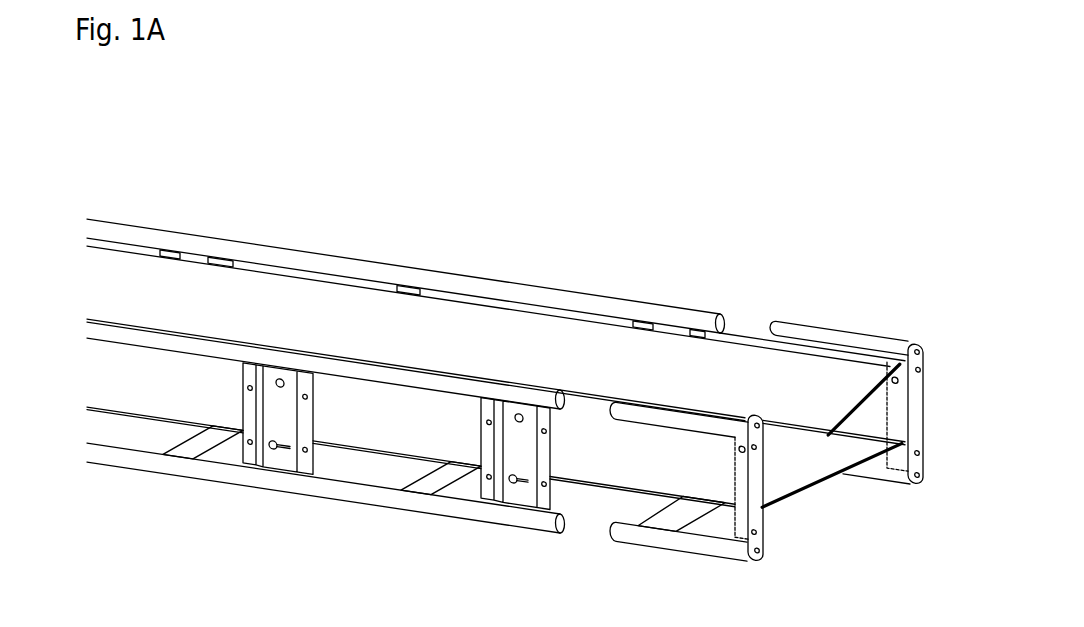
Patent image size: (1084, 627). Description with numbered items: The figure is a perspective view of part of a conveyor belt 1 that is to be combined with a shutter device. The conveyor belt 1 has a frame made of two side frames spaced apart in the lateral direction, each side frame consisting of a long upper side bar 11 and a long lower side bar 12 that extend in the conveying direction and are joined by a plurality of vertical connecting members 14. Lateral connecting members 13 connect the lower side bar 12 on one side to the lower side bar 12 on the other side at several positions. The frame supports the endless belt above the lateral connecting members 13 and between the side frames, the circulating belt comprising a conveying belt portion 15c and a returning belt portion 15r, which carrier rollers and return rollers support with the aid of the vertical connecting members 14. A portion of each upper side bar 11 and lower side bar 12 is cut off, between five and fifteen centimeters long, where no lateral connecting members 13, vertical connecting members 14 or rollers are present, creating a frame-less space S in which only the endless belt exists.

The conveyor belt 1 is at (212, 152).
The upper side bar 11 is at (577, 302).
The lower side bar 12 is at (323, 490).
The lateral connecting member 13 is at (197, 443).
The vertical connecting member 14 is at (287, 427).
The conveying belt portion 15c is at (440, 318).
The returning belt portion 15r is at (787, 463).
The frame-less space S is at (741, 332).